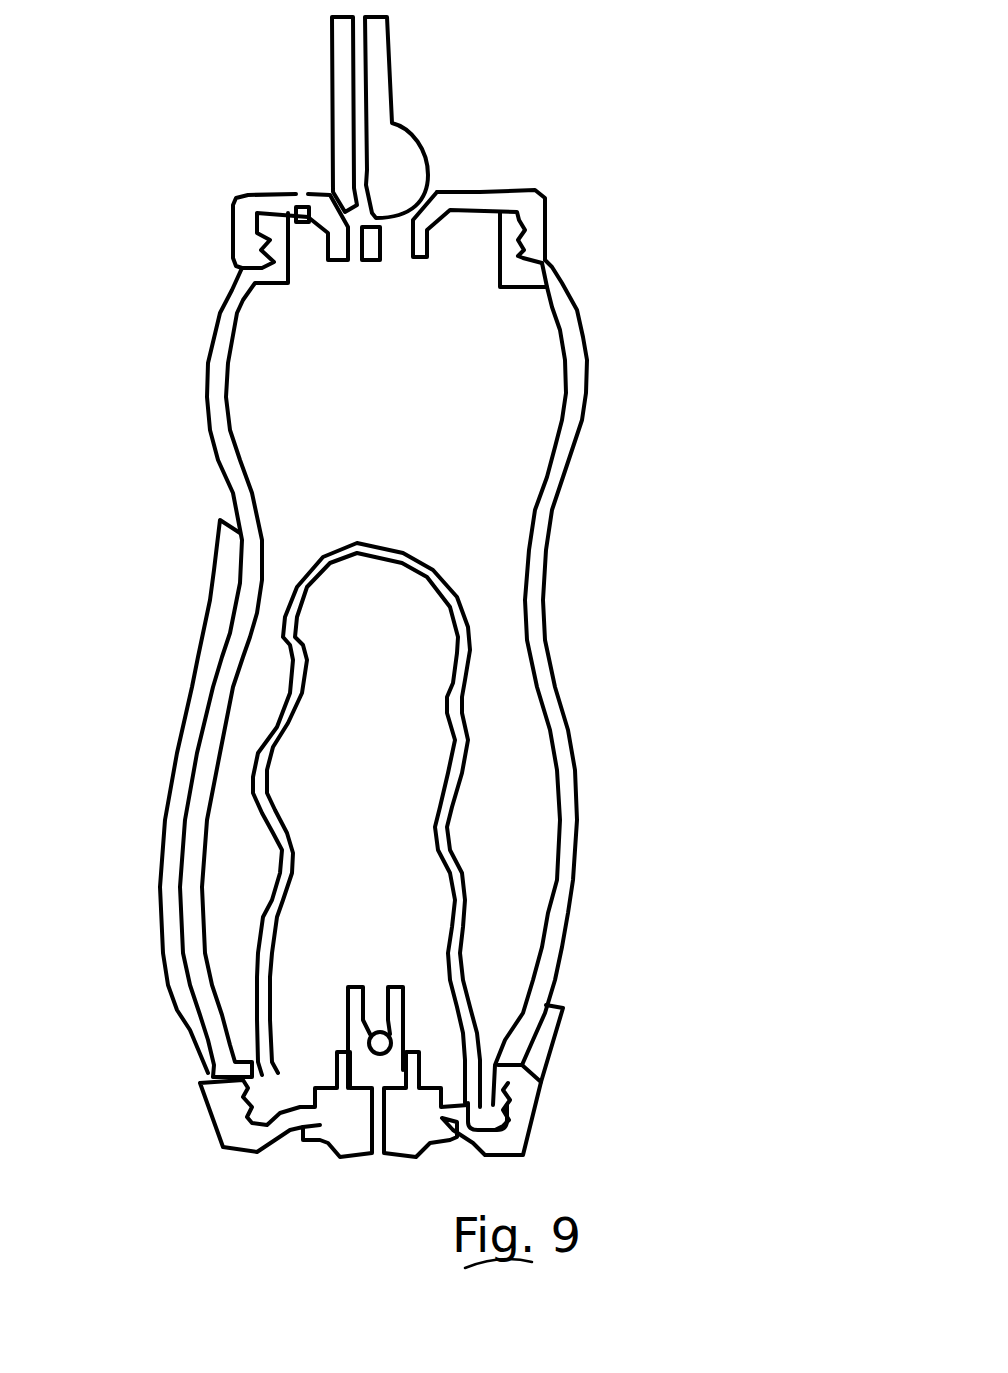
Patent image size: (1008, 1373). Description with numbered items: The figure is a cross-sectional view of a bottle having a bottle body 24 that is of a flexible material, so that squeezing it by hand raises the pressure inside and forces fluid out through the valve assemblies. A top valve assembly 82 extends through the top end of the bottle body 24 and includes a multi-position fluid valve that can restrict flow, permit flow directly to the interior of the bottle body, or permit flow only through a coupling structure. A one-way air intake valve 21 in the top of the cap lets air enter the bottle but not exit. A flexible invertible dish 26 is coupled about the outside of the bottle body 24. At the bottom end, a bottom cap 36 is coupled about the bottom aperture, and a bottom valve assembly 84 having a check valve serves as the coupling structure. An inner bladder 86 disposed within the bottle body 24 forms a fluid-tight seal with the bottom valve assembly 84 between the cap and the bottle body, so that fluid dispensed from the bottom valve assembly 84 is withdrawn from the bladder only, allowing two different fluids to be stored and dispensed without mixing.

The one-way air intake valve 21 is at (389, 186).
The bottle body 24 is at (436, 671).
The flexible invertible dish 26 is at (355, 801).
The bottom cap 36 is at (442, 1104).
The top valve assembly 82 is at (435, 117).
The bottom valve assembly 84 is at (301, 1132).
The inner bladder 86 is at (499, 825).